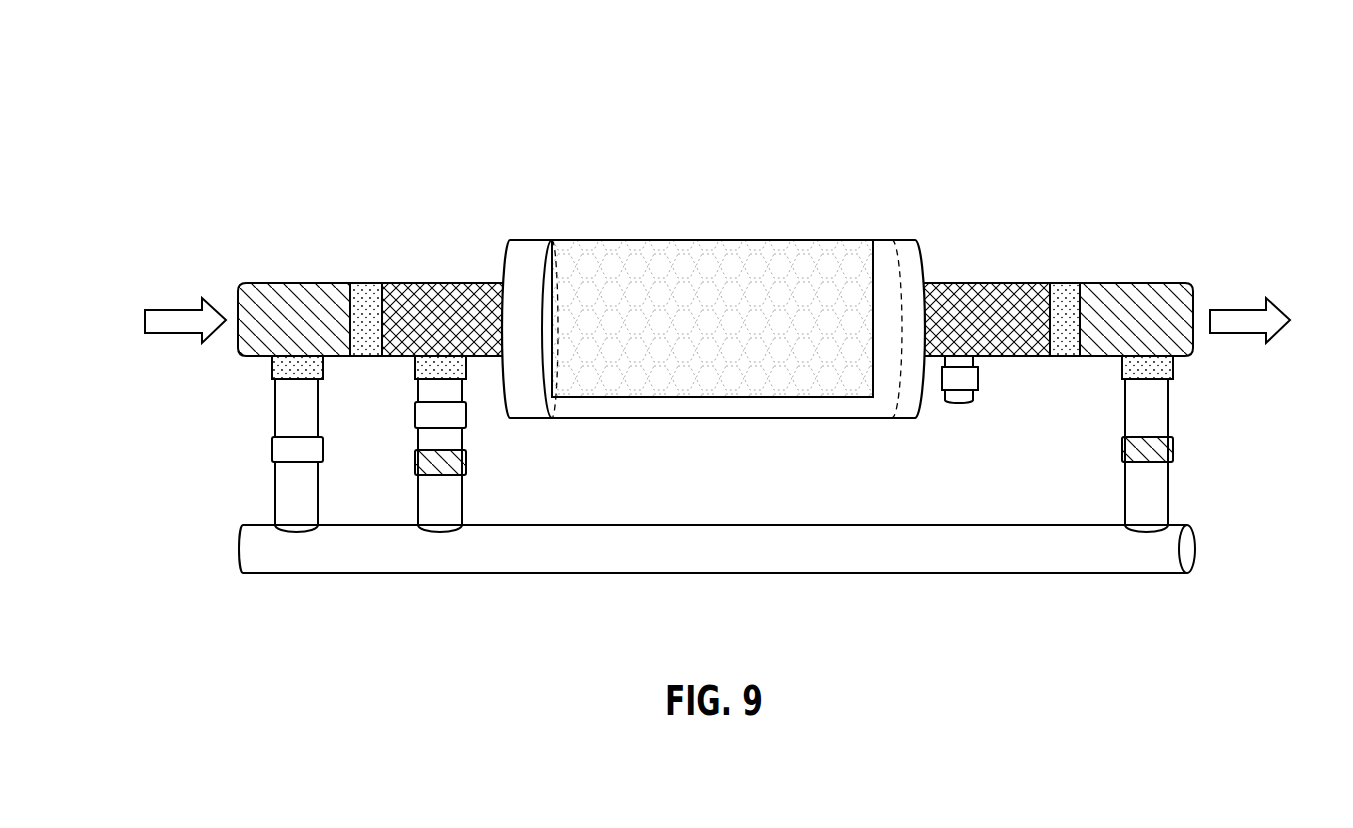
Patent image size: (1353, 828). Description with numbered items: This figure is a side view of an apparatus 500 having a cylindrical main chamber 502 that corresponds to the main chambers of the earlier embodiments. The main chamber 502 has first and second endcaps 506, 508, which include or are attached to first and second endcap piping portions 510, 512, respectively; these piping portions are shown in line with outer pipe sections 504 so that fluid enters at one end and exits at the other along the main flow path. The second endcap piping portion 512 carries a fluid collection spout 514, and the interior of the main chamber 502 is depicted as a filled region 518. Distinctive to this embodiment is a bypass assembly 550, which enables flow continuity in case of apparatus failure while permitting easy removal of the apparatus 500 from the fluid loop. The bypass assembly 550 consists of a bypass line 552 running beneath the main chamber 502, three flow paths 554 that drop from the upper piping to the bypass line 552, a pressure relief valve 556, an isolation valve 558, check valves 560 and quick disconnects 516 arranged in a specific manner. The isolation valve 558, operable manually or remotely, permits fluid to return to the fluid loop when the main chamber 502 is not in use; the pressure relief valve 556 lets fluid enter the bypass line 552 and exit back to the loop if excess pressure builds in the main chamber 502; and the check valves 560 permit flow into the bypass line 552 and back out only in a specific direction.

The apparatus 500 is at (735, 54).
The cylindrical main chamber 502 is at (652, 228).
The conduit section 504 is at (267, 335).
The first endcap 506 is at (517, 270).
The second endcap 508 is at (918, 267).
The first endcap piping portion 510 is at (418, 335).
The second endcap piping portion 512 is at (960, 335).
The fluid collection spout 514 is at (970, 380).
The quick disconnects 516 is at (423, 365).
The treatment media 518 is at (689, 341).
The bypass assembly 550 is at (188, 357).
The bypass line 552 is at (669, 566).
The flow paths 554 is at (283, 505).
The pressure relief valve 556 is at (430, 413).
The isolation valve 558 is at (285, 448).
The check valves 560 is at (457, 463).